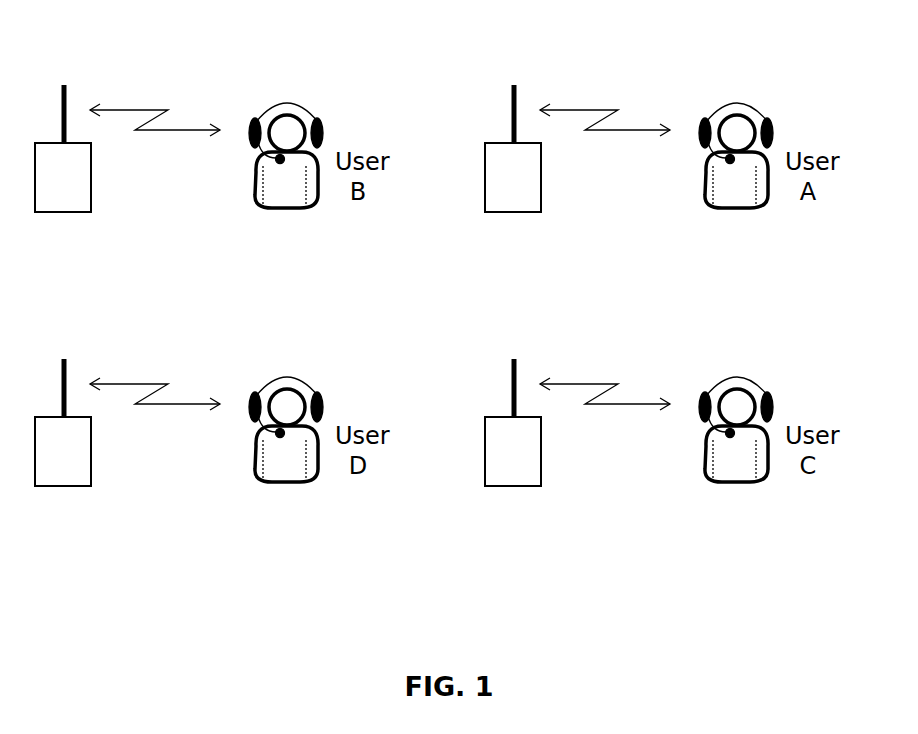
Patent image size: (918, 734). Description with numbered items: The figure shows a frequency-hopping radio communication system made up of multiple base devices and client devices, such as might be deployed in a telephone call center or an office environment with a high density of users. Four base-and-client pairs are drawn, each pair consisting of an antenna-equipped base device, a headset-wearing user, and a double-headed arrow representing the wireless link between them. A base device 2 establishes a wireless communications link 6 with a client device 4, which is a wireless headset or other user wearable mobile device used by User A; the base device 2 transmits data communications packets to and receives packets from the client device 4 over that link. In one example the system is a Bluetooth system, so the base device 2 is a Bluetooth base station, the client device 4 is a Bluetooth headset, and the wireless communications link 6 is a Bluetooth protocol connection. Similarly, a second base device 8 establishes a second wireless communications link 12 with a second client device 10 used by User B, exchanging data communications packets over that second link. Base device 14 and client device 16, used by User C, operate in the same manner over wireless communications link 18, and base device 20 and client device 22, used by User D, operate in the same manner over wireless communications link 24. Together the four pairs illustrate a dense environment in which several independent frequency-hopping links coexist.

The base device 2 is at (546, 156).
The client device 4 is at (712, 155).
The wireless communications link 6 is at (605, 108).
The second base device 8 is at (91, 188).
The second client device 10 is at (253, 140).
The second wireless communications link 12 is at (155, 108).
The base device 14 is at (548, 430).
The client device 16 is at (709, 429).
The wireless communications link 18 is at (605, 382).
The base device 20 is at (98, 430).
The client device 22 is at (259, 429).
The wireless communications link 24 is at (155, 382).